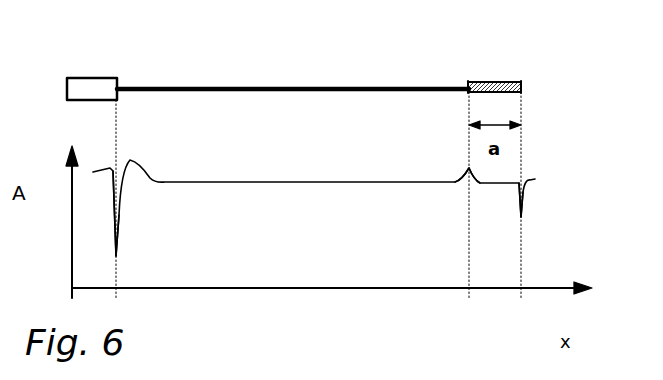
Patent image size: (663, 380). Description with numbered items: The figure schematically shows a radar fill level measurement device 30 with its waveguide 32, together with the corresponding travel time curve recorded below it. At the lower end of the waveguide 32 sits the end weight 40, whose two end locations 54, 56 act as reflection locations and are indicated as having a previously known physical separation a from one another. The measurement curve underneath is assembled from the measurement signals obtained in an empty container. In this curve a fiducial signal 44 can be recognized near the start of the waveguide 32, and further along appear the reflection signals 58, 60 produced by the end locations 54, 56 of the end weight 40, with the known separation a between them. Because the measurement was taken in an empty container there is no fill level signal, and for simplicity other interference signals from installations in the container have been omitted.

The radar fill level measurement device 30 is at (95, 79).
The waveguide 32 is at (257, 87).
The end weight 40 is at (494, 85).
The fiducial signal 44 is at (120, 252).
The end location 54 is at (468, 82).
The end location 56 is at (521, 87).
The reflection signal 58 is at (463, 166).
The reflection signal 60 is at (523, 217).